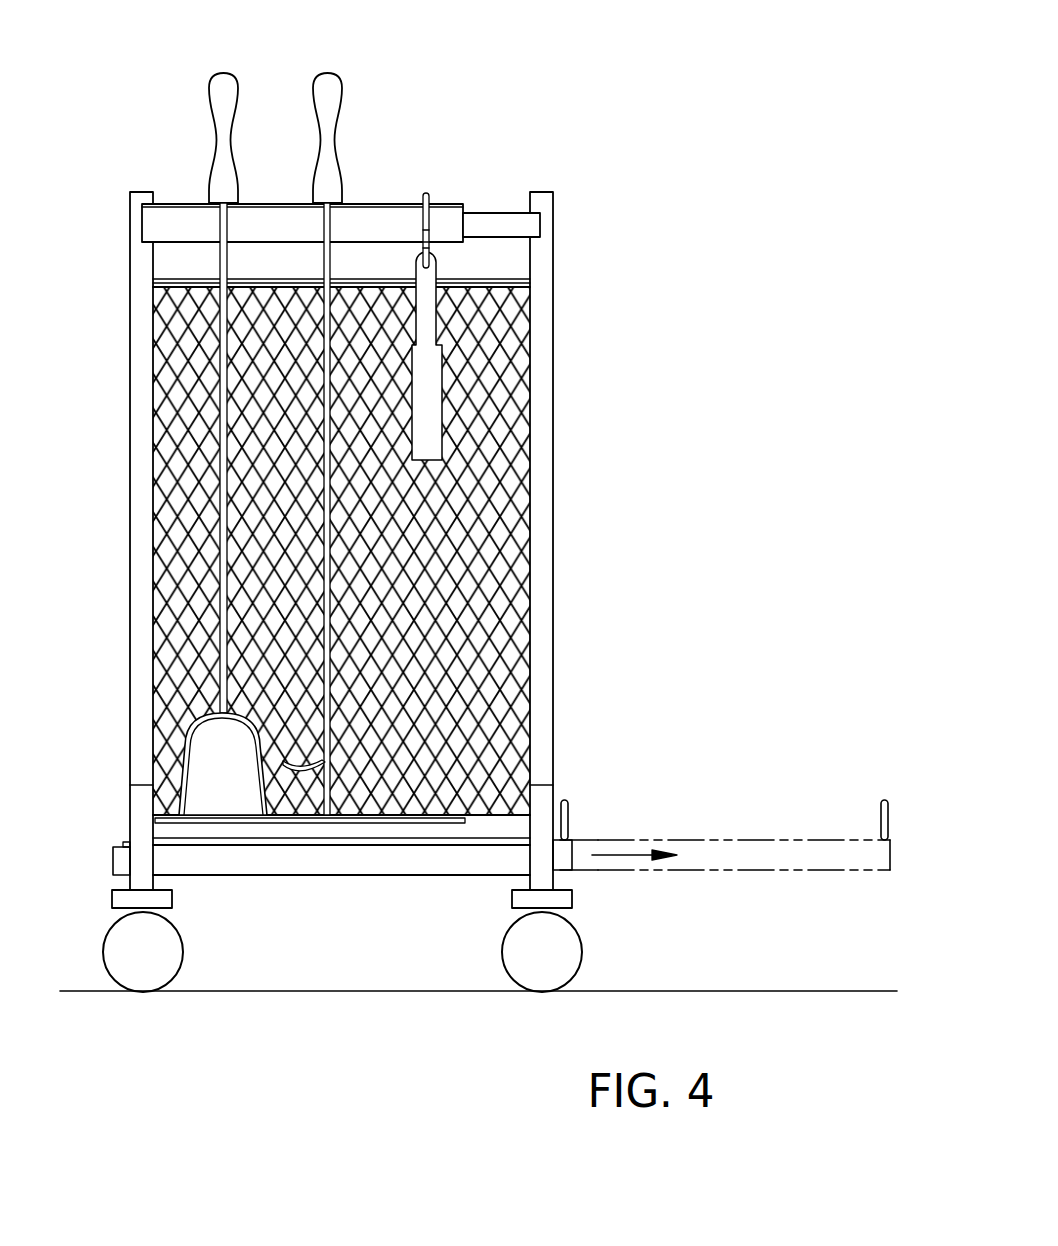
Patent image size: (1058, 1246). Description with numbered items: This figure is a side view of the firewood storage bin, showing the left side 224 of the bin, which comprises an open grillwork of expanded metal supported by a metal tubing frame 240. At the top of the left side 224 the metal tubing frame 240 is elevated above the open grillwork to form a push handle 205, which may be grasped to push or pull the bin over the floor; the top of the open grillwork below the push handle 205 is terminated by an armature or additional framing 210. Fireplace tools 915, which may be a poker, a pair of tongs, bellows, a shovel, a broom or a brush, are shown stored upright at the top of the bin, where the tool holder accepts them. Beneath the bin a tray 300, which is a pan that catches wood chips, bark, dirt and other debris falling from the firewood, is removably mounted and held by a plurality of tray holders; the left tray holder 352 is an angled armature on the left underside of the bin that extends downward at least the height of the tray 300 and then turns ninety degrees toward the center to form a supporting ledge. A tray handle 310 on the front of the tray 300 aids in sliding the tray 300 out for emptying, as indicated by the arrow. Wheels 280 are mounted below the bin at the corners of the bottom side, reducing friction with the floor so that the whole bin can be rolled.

The fireplace tools 915 is at (227, 96).
The push handle 205 is at (497, 225).
The additional framing 210 is at (483, 278).
The metal tubing frame 240 is at (543, 392).
The left side 224 is at (470, 515).
The tray handle 310 is at (567, 815).
The tray 300 is at (562, 862).
The left tray holder 352 is at (403, 873).
The wheels 280 is at (530, 960).